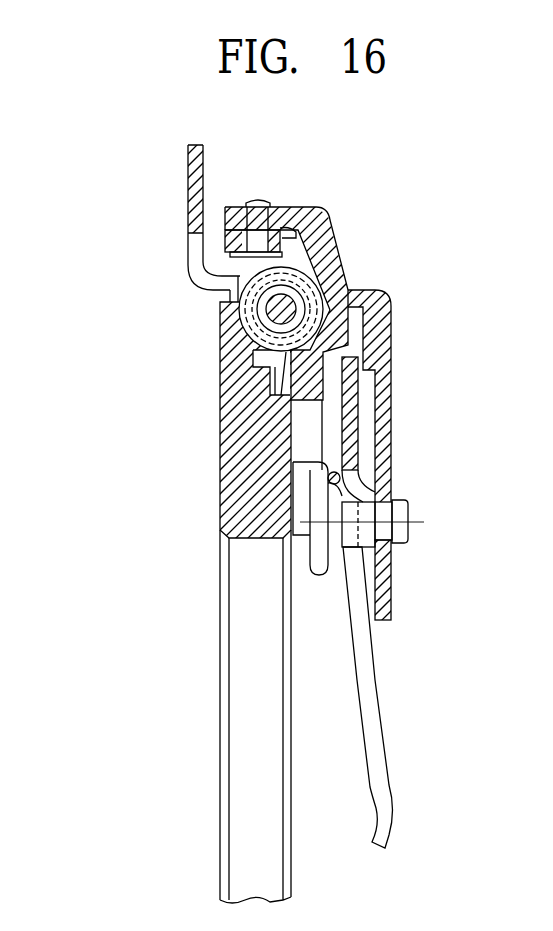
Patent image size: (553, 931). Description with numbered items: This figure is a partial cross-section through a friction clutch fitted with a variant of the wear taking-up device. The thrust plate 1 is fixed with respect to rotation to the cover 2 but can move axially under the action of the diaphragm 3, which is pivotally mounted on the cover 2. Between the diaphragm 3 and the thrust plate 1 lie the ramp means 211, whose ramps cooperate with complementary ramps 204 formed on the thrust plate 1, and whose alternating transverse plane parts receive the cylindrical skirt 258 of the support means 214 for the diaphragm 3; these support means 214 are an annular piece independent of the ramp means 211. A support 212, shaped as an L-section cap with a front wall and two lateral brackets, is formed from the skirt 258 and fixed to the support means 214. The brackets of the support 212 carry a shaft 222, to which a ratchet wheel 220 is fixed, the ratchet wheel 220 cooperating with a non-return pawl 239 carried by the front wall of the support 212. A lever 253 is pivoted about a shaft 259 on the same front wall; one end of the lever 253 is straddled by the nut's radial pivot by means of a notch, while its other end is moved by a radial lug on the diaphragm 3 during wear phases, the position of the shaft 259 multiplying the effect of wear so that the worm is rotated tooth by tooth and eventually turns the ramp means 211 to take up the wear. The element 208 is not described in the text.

The thrust plate 1 is at (207, 389).
The cover 2 is at (401, 290).
The diaphragm 3 is at (388, 662).
The complementary ramps 204 is at (292, 440).
The pivot bolt 208 is at (424, 530).
The ramp means 211 is at (305, 403).
The support 212 is at (337, 228).
The support means 214 is at (360, 375).
The ratchet wheel 220 is at (322, 306).
The shaft 222 is at (238, 308).
The non-return pawl 239 is at (293, 280).
The lever 253 is at (232, 236).
The cylindrical skirt 258 is at (330, 412).
The shaft 259 is at (252, 200).